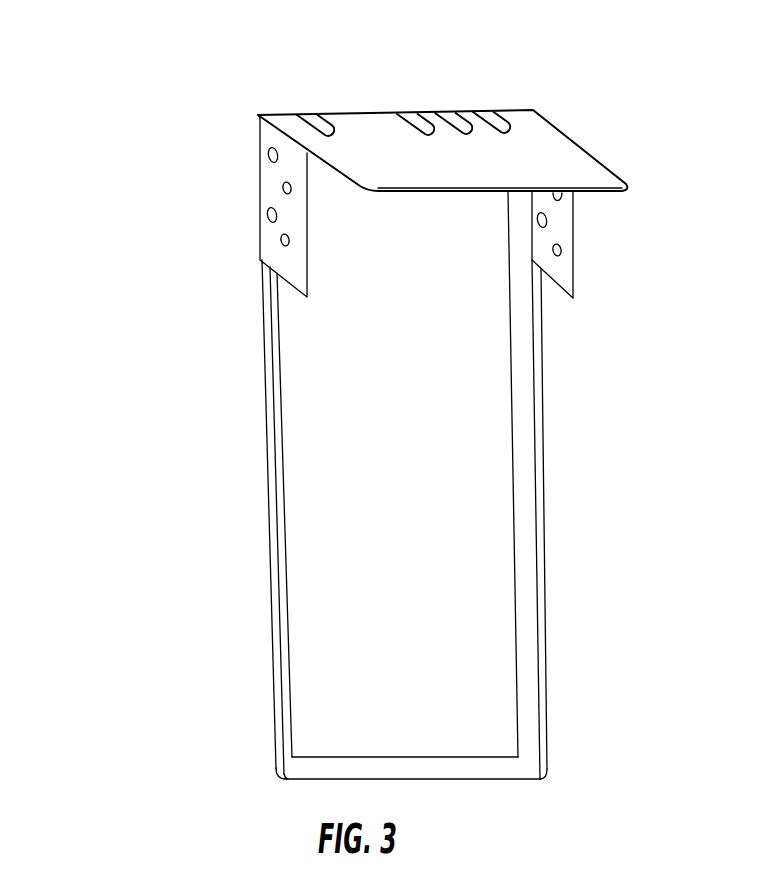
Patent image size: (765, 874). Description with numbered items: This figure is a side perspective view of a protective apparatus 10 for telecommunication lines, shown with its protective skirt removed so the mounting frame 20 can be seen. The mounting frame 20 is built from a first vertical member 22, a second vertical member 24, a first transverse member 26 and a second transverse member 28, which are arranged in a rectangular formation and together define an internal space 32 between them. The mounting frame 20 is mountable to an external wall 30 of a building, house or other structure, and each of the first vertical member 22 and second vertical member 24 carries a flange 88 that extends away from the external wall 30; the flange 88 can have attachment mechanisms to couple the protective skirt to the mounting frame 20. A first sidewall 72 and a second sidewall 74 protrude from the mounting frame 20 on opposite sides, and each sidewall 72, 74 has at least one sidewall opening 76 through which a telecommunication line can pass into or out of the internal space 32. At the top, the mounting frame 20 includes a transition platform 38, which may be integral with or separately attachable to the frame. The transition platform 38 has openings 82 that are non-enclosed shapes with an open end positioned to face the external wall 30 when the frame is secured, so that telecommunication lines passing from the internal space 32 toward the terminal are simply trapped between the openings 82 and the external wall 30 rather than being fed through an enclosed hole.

The protective apparatus 10 is at (148, 66).
The mounting frame 20 is at (556, 576).
The first vertical member 22 is at (268, 532).
The second vertical member 24 is at (546, 519).
The first transverse member 26 is at (277, 114).
The second transverse member 28 is at (378, 756).
The external wall 30 is at (70, 489).
The internal space 32 is at (326, 372).
The transition platform 38 is at (588, 150).
The first sidewall 72 is at (308, 258).
The second sidewall 74 is at (575, 270).
The sidewall opening 76 is at (271, 163).
The opening 82 is at (307, 125).
The flange 88 is at (278, 733).